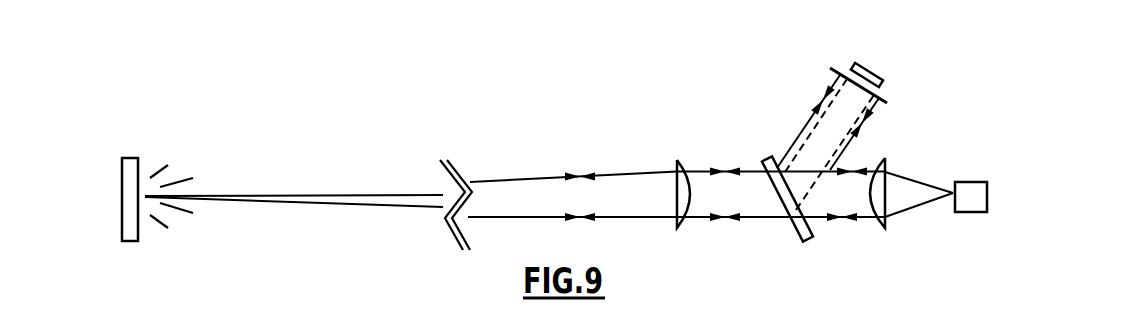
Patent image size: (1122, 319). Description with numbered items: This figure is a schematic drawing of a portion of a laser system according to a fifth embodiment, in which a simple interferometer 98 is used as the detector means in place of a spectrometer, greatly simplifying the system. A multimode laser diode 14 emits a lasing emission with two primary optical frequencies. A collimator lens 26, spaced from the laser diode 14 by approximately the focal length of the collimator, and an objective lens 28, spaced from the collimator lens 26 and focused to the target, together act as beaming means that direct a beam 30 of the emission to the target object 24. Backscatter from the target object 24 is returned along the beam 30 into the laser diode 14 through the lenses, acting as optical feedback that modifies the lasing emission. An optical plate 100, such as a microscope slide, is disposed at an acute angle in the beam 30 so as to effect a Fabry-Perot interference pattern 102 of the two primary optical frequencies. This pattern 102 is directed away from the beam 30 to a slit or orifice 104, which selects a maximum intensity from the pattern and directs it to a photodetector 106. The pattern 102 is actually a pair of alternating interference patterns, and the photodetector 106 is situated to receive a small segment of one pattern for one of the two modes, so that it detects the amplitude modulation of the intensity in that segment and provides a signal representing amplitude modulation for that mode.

The laser diode 14 is at (973, 212).
The target object 24 is at (140, 168).
The collimator lens 26 is at (877, 227).
The objective lens 28 is at (683, 228).
The beam 30 is at (540, 177).
The interferometer 98 is at (793, 55).
The optical plate 100 is at (767, 158).
The interference pattern 102 is at (810, 125).
The slit or orifice 104 is at (868, 88).
The photodetector 106 is at (877, 78).